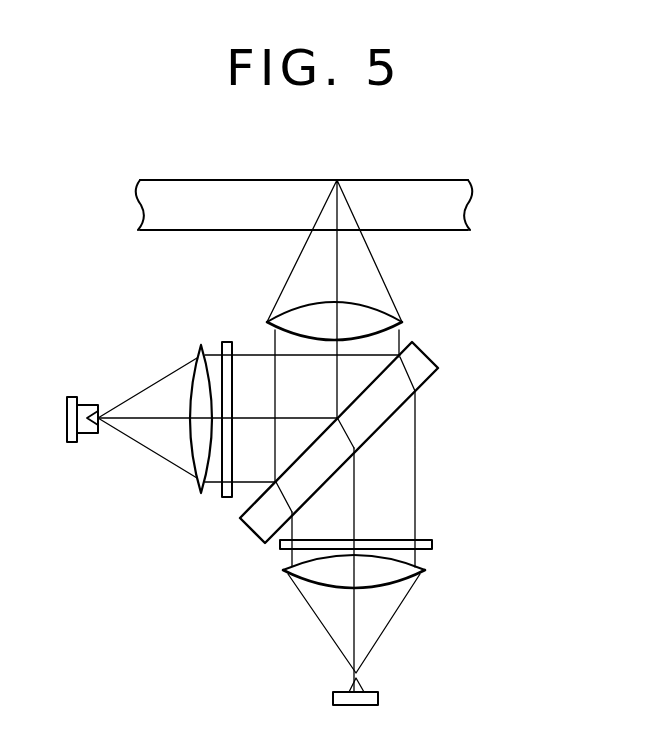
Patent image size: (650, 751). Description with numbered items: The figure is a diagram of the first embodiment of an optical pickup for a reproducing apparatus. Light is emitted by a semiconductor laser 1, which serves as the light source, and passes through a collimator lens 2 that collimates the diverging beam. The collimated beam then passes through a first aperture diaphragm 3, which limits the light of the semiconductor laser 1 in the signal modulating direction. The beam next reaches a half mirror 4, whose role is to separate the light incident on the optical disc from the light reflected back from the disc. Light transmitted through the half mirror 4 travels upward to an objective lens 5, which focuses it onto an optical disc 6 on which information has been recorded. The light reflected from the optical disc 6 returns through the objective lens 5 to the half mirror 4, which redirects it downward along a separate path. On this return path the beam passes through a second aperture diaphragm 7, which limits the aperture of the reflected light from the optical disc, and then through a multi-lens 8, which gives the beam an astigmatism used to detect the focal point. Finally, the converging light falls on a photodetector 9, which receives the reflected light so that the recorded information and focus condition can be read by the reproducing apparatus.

The semiconductor laser 1 is at (68, 447).
The collimator lens 2 is at (200, 485).
The first aperture diaphragm 3 is at (228, 498).
The half mirror 4 is at (440, 365).
The objective lens 5 is at (405, 322).
The optical disc 6 is at (470, 205).
The second aperture diaphragm 7 is at (432, 541).
The multi-lens 8 is at (425, 570).
The photodetector 9 is at (375, 701).